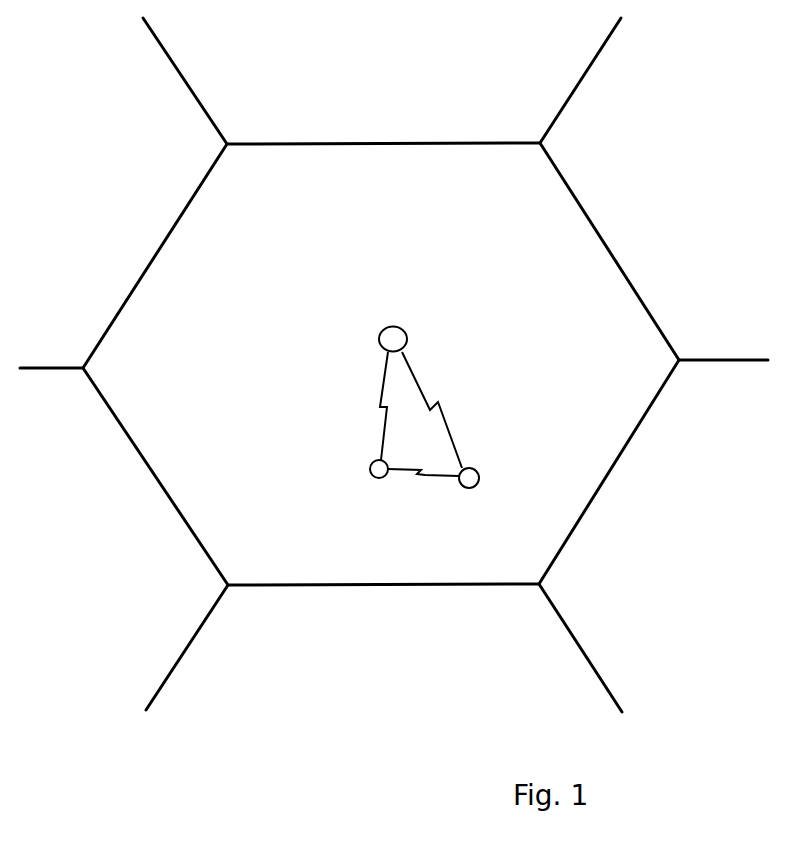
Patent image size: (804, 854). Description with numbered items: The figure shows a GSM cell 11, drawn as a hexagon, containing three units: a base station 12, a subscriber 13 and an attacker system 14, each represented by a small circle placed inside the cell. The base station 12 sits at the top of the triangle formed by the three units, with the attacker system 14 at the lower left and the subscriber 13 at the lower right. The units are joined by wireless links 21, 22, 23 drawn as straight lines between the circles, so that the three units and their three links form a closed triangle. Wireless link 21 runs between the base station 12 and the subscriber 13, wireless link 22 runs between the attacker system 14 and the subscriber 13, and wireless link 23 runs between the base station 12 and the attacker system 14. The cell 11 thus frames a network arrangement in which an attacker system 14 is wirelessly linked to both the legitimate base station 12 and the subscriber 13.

The GSM cell 11 is at (622, 452).
The base station 12 is at (408, 333).
The subscriber 13 is at (480, 474).
The attacker system 14 is at (369, 470).
The wireless link 21 is at (440, 403).
The wireless link 22 is at (423, 480).
The wireless link 23 is at (378, 408).